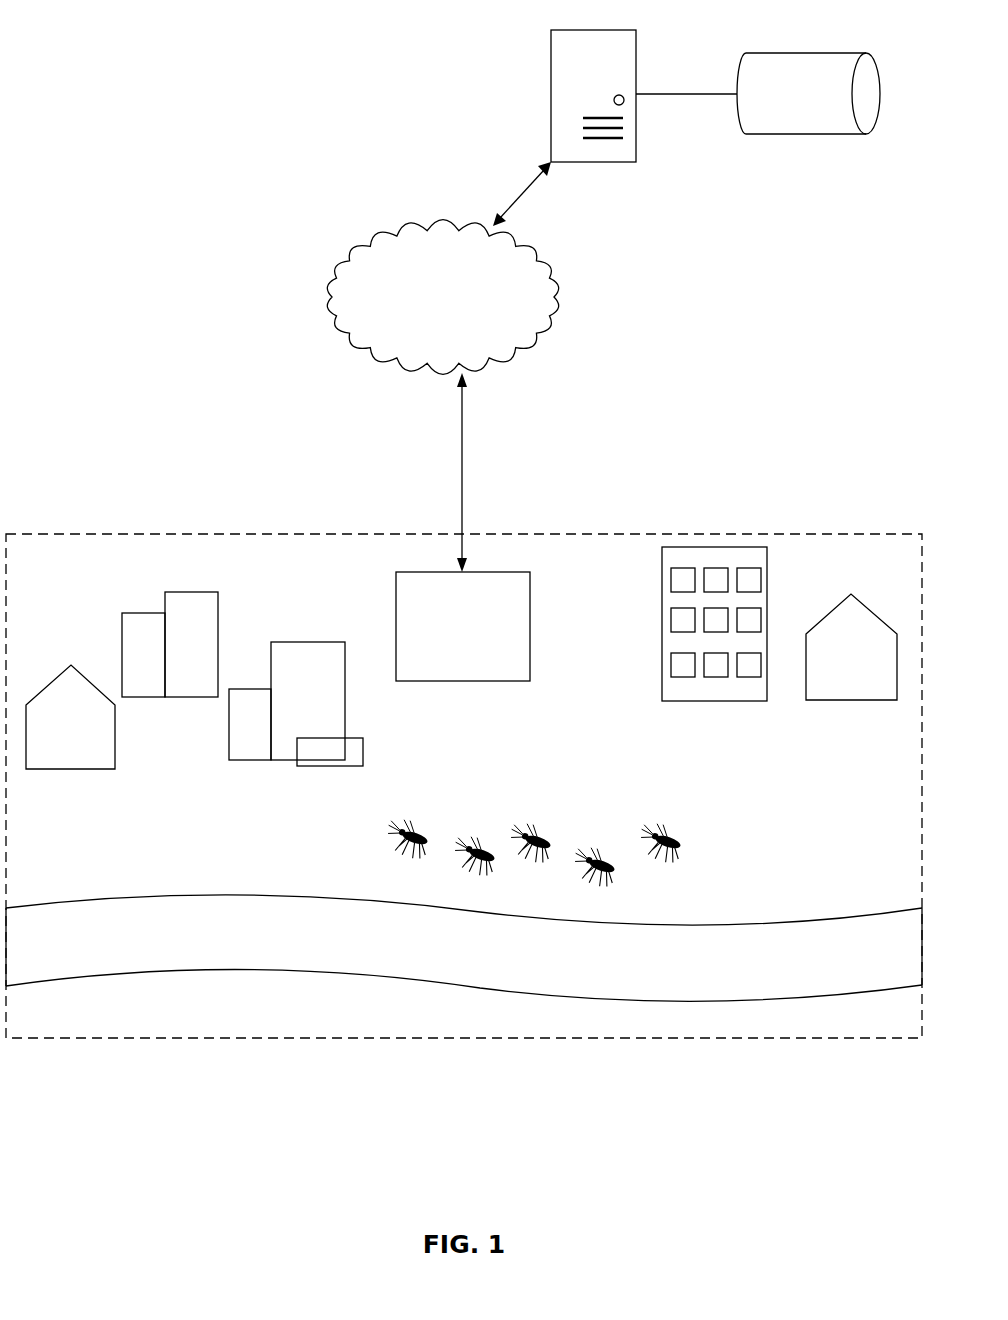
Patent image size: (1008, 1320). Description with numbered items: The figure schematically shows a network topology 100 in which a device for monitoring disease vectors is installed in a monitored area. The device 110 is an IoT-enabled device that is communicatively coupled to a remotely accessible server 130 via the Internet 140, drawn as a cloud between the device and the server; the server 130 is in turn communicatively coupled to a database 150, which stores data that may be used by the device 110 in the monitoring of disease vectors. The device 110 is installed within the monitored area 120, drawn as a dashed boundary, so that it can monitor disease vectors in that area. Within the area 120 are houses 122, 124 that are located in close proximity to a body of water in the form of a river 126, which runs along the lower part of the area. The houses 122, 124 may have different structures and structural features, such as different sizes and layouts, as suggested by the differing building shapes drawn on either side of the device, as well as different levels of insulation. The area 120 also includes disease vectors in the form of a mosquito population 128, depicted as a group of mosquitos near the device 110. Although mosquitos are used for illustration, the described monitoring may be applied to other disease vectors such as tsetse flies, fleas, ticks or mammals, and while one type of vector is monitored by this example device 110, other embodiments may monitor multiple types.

The topology 100 is at (146, 53).
The device 110 is at (530, 632).
The monitored area 120 is at (60, 534).
The houses 122 is at (303, 780).
The houses 124 is at (688, 705).
The river 126 is at (823, 920).
The mosquito population 128 is at (685, 818).
The server 130 is at (551, 71).
The Internet 140 is at (540, 244).
The database 150 is at (800, 134).